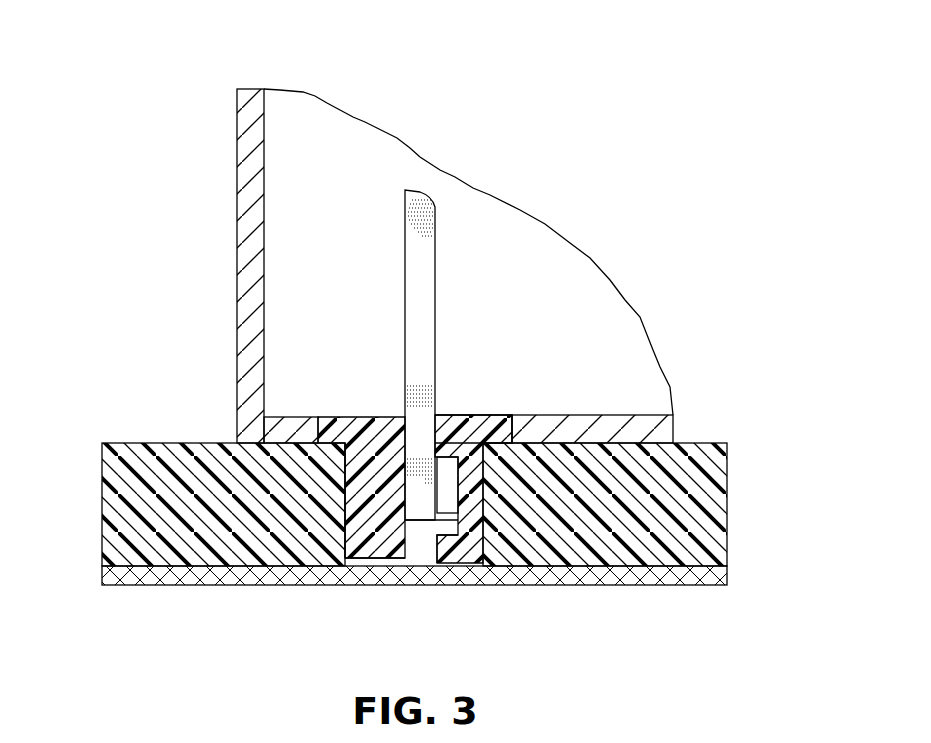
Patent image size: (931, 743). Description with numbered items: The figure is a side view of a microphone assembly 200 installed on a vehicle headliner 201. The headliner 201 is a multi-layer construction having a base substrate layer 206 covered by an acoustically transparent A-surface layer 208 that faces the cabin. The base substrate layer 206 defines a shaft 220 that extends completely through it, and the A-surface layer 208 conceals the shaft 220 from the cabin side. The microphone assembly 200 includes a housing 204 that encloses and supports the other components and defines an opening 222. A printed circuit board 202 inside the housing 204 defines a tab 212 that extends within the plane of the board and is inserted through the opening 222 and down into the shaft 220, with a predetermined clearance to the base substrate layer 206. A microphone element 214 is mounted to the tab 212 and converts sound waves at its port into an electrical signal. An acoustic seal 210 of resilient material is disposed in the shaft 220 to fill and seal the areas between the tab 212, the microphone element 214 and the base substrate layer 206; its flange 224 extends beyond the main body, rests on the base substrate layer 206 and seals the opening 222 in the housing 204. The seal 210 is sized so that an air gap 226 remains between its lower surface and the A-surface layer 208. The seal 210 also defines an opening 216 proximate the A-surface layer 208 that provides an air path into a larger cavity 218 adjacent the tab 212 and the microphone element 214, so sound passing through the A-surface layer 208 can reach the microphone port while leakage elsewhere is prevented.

The microphone assembly 200 is at (469, 126).
The vehicle headliner 201 is at (90, 443).
The printed circuit board 202 is at (423, 229).
The housing 204 is at (237, 230).
The base substrate layer 206 is at (728, 488).
The A-surface layer 208 is at (728, 580).
The acoustic seal 210 is at (317, 431).
The tab 212 is at (421, 432).
The microphone element 214 is at (445, 487).
The opening 216 is at (405, 545).
The cavity 218 is at (441, 527).
The shaft 220 is at (347, 519).
The opening 222 is at (512, 433).
The flange 224 is at (500, 437).
The air gap 226 is at (375, 555).